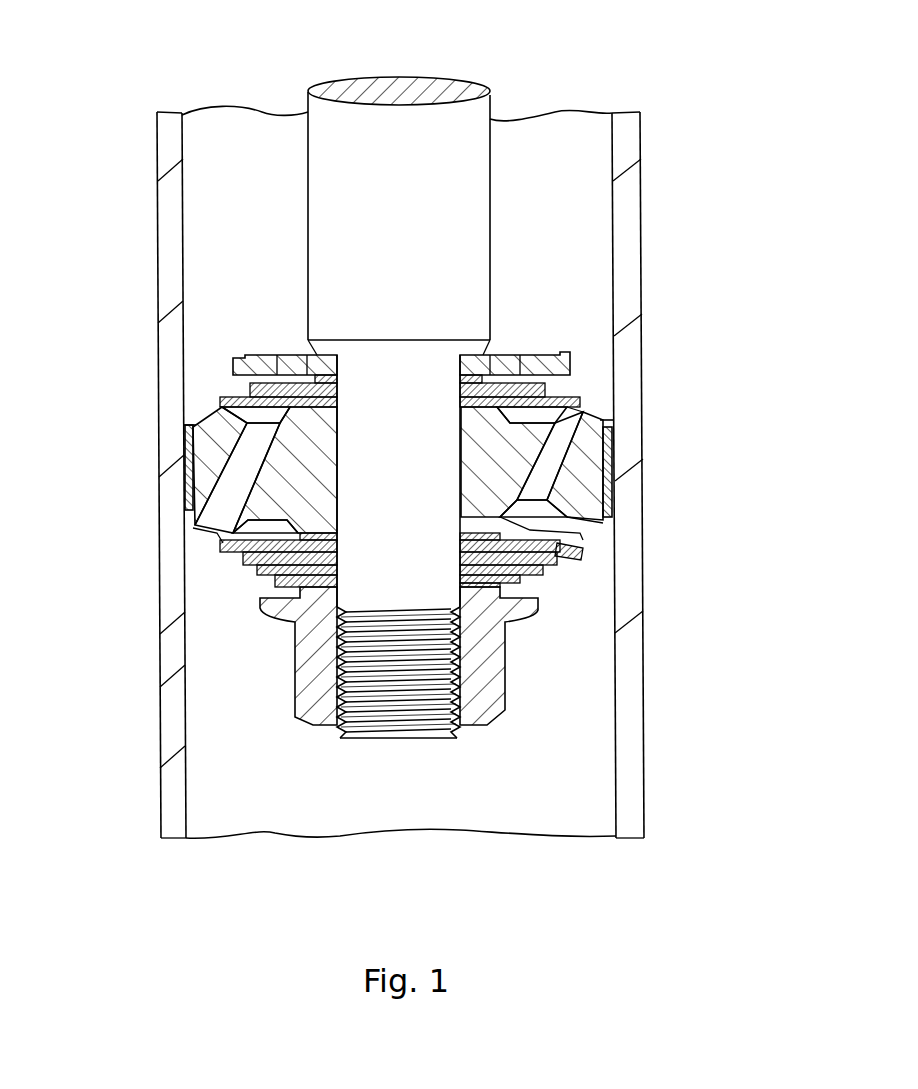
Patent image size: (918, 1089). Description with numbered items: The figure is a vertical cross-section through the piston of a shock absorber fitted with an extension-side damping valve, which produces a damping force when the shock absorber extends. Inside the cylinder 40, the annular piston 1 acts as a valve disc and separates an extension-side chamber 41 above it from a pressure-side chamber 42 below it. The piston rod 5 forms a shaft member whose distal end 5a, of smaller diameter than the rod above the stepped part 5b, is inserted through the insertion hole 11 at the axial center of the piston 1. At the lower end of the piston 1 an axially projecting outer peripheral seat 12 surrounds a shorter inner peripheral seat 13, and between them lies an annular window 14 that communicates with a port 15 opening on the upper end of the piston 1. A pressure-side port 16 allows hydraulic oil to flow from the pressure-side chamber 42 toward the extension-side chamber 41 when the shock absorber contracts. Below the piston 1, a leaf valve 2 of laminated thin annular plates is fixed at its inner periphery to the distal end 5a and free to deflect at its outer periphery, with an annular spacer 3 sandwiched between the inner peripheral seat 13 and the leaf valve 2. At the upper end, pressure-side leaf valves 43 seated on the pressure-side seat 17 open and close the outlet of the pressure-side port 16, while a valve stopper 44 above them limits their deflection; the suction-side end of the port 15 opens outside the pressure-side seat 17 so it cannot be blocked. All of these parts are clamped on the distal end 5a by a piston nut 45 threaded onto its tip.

The piston 1 is at (628, 493).
The leaf valve 2 is at (221, 579).
The spacer 3 is at (545, 520).
The piston rod 5 is at (493, 153).
The distal end 5a is at (347, 480).
The stepped part 5b is at (282, 355).
The insertion hole 11 is at (350, 447).
The outer peripheral seat 12 is at (225, 566).
The inner peripheral seat 13 is at (297, 580).
The annular window 14 is at (222, 543).
The port 15 is at (572, 455).
The pressure-side port 16 is at (190, 528).
The pressure-side seat 17 is at (604, 421).
The cylinder 40 is at (168, 222).
The extension-side chamber 41 is at (560, 193).
The pressure-side chamber 42 is at (560, 770).
The pressure-side leaf valves 43 is at (575, 391).
The valve stopper 44 is at (560, 354).
The piston nut 45 is at (560, 673).